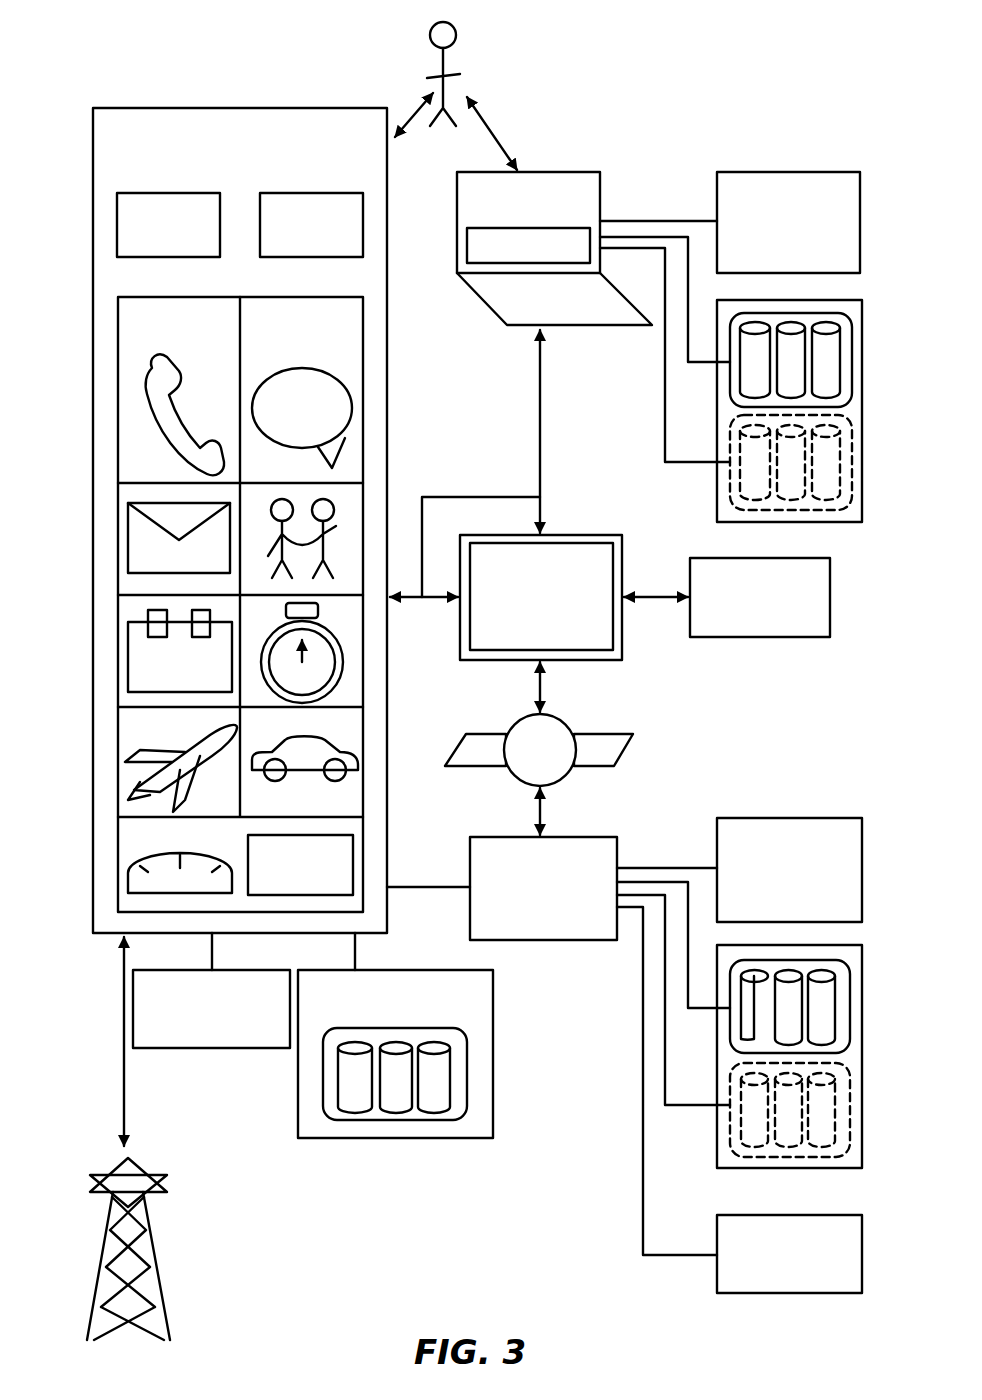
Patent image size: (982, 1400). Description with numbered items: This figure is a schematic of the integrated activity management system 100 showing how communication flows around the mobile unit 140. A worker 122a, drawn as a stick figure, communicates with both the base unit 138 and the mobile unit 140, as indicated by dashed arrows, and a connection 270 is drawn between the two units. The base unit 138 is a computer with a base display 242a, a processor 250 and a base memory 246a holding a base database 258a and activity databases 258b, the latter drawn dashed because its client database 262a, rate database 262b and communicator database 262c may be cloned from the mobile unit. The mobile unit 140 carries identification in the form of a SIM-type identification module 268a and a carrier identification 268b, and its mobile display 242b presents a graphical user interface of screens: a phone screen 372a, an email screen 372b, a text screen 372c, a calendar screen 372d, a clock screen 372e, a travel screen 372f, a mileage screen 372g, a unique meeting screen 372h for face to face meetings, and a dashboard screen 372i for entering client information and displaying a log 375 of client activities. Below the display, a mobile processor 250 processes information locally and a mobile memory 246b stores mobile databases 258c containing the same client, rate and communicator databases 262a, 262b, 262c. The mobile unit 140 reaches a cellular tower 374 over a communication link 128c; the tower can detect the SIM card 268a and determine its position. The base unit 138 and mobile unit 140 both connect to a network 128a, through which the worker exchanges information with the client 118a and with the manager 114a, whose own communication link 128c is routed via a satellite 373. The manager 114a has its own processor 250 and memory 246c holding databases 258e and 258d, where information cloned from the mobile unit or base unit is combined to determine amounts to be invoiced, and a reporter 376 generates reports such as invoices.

The integrated system 100 is at (211, 494).
The mobile unit 140 is at (240, 520).
The identification module 268a is at (168, 225).
The carrier identification 268b is at (311, 225).
The mobile display 242b is at (252, 610).
The phone screen 372a is at (147, 382).
The email screen 372b is at (128, 540).
The text screen 372c is at (352, 412).
The meeting screen 372h is at (336, 526).
The calendar screen 372d is at (128, 660).
The clock screen 372e is at (344, 662).
The travel screen 372f is at (128, 770).
The mileage screen 372g is at (360, 770).
The dashboard screen 372i is at (128, 885).
The log 375 is at (300, 865).
The processor 250 is at (497, 610).
The mobile memory 246b is at (578, 1089).
The mobile databases 258c is at (460, 1120).
The client database 262a is at (355, 1116).
The rate database 262b is at (393, 1116).
The communicator database 262c is at (432, 1116).
The communication link 128c is at (120, 1035).
The satellite 373 is at (565, 775).
The cellular tower 374 is at (135, 1173).
The worker 122a is at (457, 32).
The communication link 270 is at (457, 270).
The base unit 138 is at (554, 248).
The base display 242a is at (528, 245).
The base memory 246a is at (862, 516).
The base database 258a is at (852, 362).
The activity databases 258b is at (852, 462).
The network 128a is at (541, 597).
The client 118a is at (760, 597).
The manager 114a is at (543, 888).
The manager memory 246c is at (862, 1160).
The additional database 258e is at (850, 1008).
The manager memory databases 258d is at (850, 1105).
The reporter 376 is at (789, 1254).